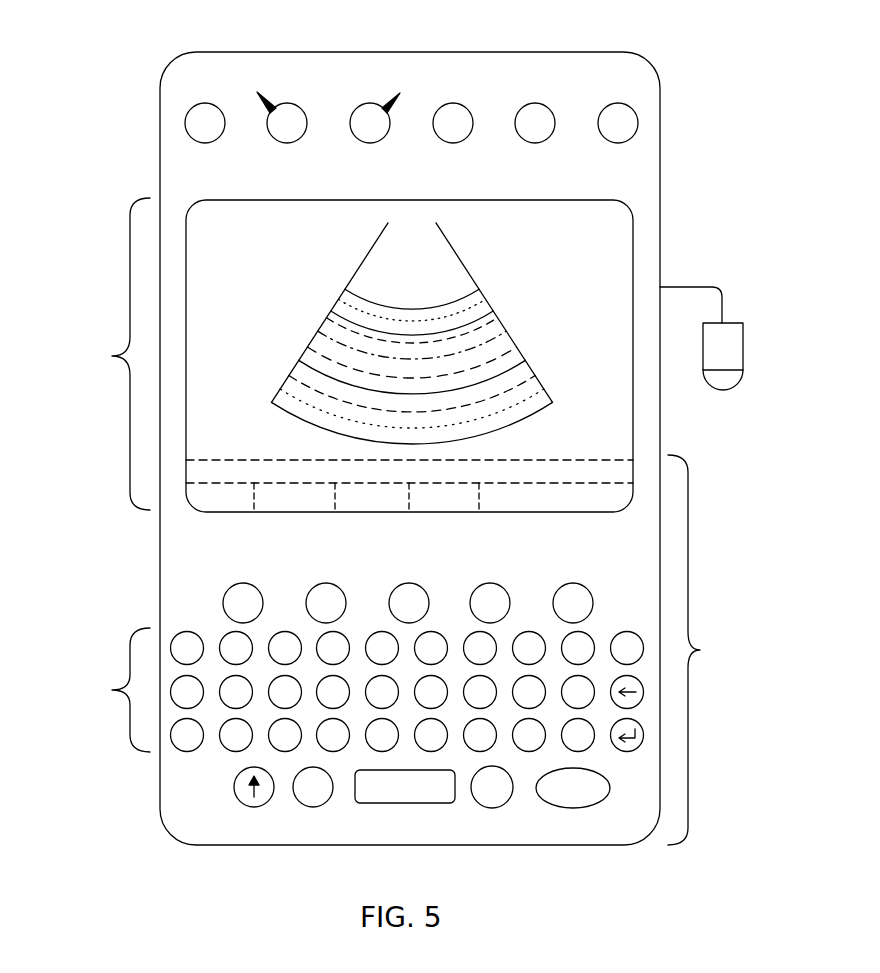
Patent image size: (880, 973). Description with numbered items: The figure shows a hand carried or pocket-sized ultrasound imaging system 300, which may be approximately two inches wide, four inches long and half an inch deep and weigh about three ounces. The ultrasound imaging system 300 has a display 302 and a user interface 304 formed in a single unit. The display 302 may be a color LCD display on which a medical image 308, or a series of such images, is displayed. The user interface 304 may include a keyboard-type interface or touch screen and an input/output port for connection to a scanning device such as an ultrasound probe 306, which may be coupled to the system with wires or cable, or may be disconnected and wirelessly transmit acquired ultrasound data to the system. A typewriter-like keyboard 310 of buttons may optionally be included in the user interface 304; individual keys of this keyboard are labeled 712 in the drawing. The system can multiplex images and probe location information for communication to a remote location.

The ultrasound imaging system 300 is at (675, 46).
The display 302 is at (112, 356).
The user interface 304 is at (700, 650).
The ultrasound probe 306 is at (733, 322).
The medical image 308 is at (483, 300).
The typewriter-like keyboard 310 is at (112, 690).
The keys 712 is at (190, 632).